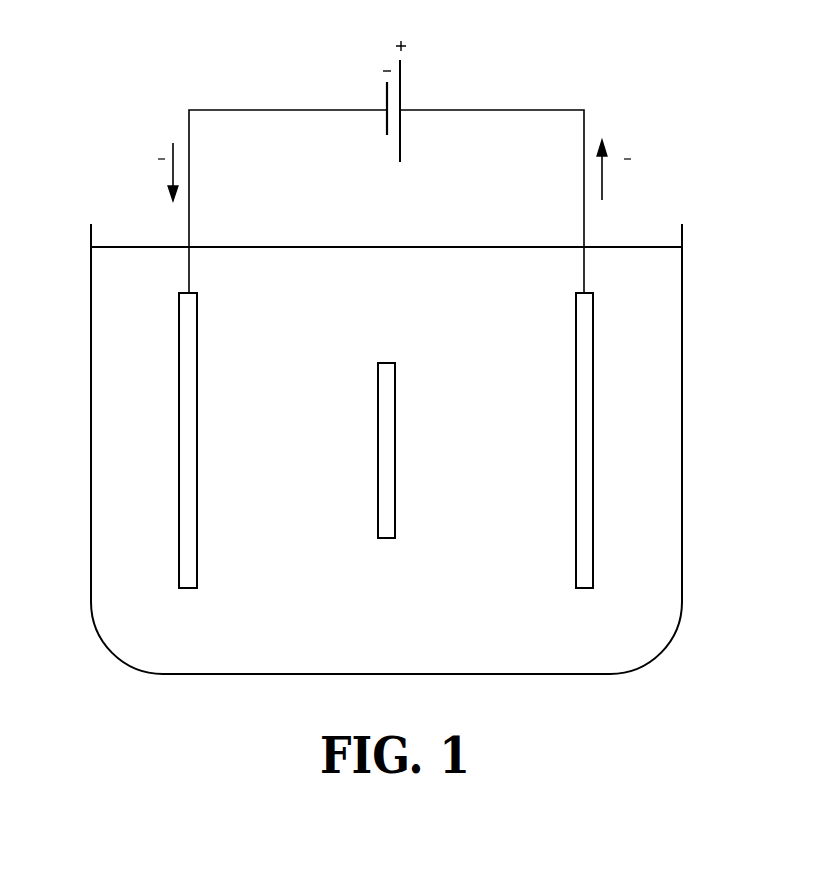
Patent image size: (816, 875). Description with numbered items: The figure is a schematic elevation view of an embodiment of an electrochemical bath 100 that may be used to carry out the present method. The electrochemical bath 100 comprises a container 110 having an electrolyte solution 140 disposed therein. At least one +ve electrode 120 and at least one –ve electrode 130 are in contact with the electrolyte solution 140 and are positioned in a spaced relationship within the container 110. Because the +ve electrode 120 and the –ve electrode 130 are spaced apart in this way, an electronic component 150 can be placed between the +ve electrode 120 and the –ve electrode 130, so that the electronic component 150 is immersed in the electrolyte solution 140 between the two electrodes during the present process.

The electrochemical bath 100 is at (400, 337).
The container 110 is at (682, 427).
The +ve electrode 120 is at (585, 320).
The –ve electrode 130 is at (187, 351).
The electrolyte solution 140 is at (390, 631).
The electronic component 150 is at (388, 450).